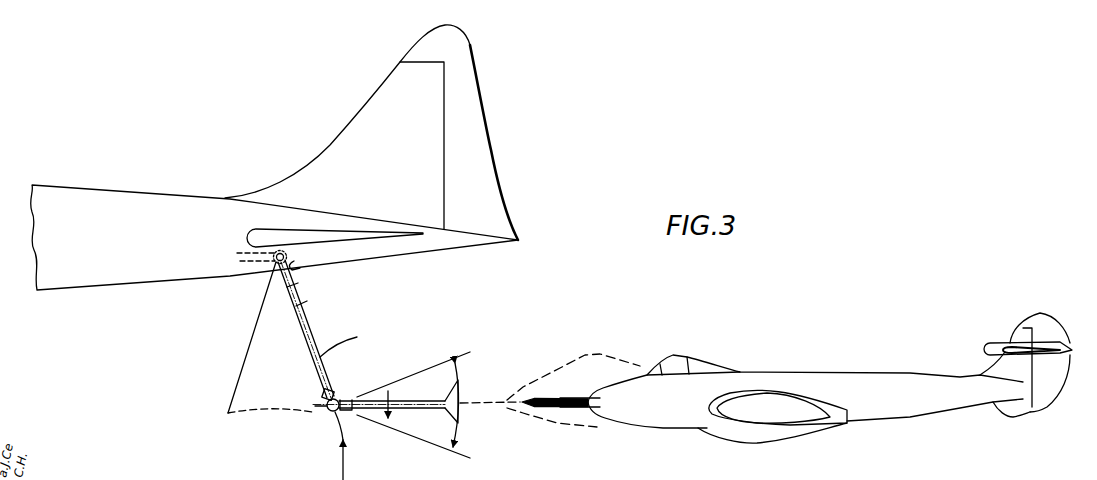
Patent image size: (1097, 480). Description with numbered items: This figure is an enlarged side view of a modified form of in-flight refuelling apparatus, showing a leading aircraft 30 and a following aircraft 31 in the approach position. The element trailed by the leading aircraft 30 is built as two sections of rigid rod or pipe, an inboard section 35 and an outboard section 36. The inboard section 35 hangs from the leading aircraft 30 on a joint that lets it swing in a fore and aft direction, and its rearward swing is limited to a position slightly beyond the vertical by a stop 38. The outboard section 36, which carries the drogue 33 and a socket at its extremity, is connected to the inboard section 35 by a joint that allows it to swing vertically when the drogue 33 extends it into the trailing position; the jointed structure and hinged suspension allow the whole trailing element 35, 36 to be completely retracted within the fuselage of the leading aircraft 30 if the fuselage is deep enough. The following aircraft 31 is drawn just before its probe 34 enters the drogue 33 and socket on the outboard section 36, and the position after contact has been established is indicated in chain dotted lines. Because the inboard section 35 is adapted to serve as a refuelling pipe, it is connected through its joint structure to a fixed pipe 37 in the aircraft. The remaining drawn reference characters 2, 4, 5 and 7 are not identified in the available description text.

The leading aircraft 30 is at (95, 186).
The following aircraft 31 is at (860, 368).
The drogue 33 is at (461, 400).
The probe 34 is at (545, 410).
The inboard section 35 is at (302, 398).
The outboard section 36 is at (444, 399).
The fixed pipe 37 is at (243, 261).
The stop 38 is at (294, 264).
The boom strut 5 is at (266, 243).
The direction of movement 7 is at (298, 345).
The direction arrow 4 is at (347, 446).
The direction arrow 2 is at (413, 405).